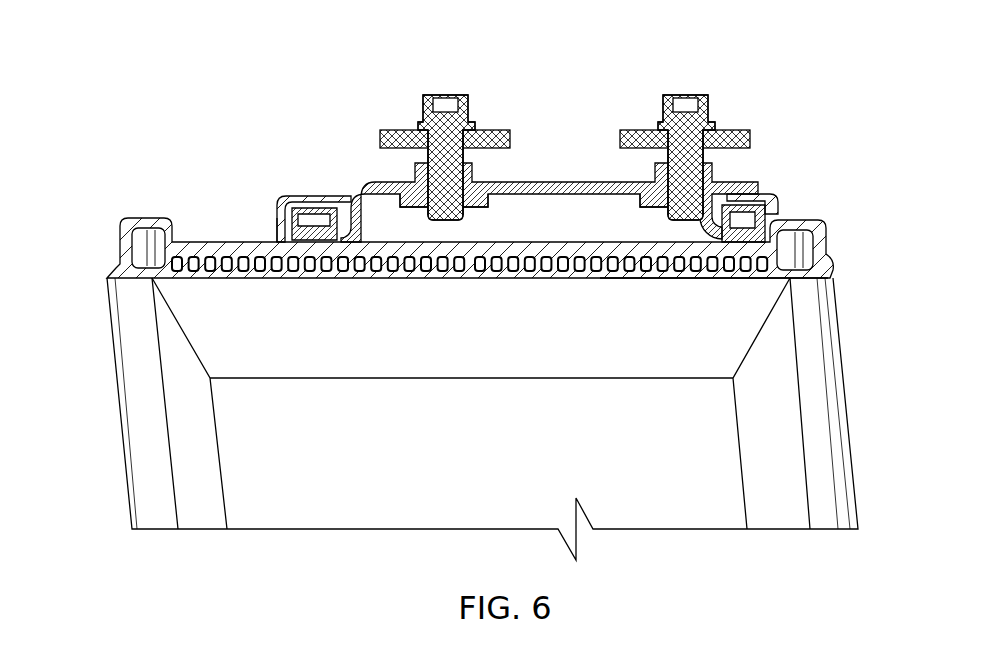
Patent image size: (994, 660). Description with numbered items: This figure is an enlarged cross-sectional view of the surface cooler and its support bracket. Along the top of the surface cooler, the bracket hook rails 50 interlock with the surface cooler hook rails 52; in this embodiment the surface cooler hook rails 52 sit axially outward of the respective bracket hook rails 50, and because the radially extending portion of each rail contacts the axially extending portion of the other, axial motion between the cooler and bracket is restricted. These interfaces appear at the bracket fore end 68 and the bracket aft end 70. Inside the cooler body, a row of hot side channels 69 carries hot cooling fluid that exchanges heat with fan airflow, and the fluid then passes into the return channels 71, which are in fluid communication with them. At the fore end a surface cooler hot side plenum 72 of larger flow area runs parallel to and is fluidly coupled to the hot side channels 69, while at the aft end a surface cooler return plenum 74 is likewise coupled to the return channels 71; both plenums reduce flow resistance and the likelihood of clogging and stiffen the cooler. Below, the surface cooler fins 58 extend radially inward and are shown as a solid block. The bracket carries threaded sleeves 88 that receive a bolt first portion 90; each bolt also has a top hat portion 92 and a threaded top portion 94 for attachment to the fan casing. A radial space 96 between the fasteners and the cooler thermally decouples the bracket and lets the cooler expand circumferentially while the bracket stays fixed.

The bracket hook rail 50 is at (328, 222).
The surface cooler hook rail 52 is at (278, 218).
The surface cooler fins 58 is at (372, 502).
The bracket fore end 68 is at (287, 195).
The hot side channels 69 is at (277, 262).
The bracket aft end 70 is at (779, 205).
The return channels 71 is at (700, 270).
The surface cooler hot side plenum 72 is at (120, 242).
The surface cooler return plenum 74 is at (828, 254).
The threaded sleeve 88 is at (643, 204).
The bolt first portion 90 is at (668, 155).
The top hat portion 92 is at (620, 136).
The threaded top portion 94 is at (682, 94).
The radial space 96 is at (447, 237).